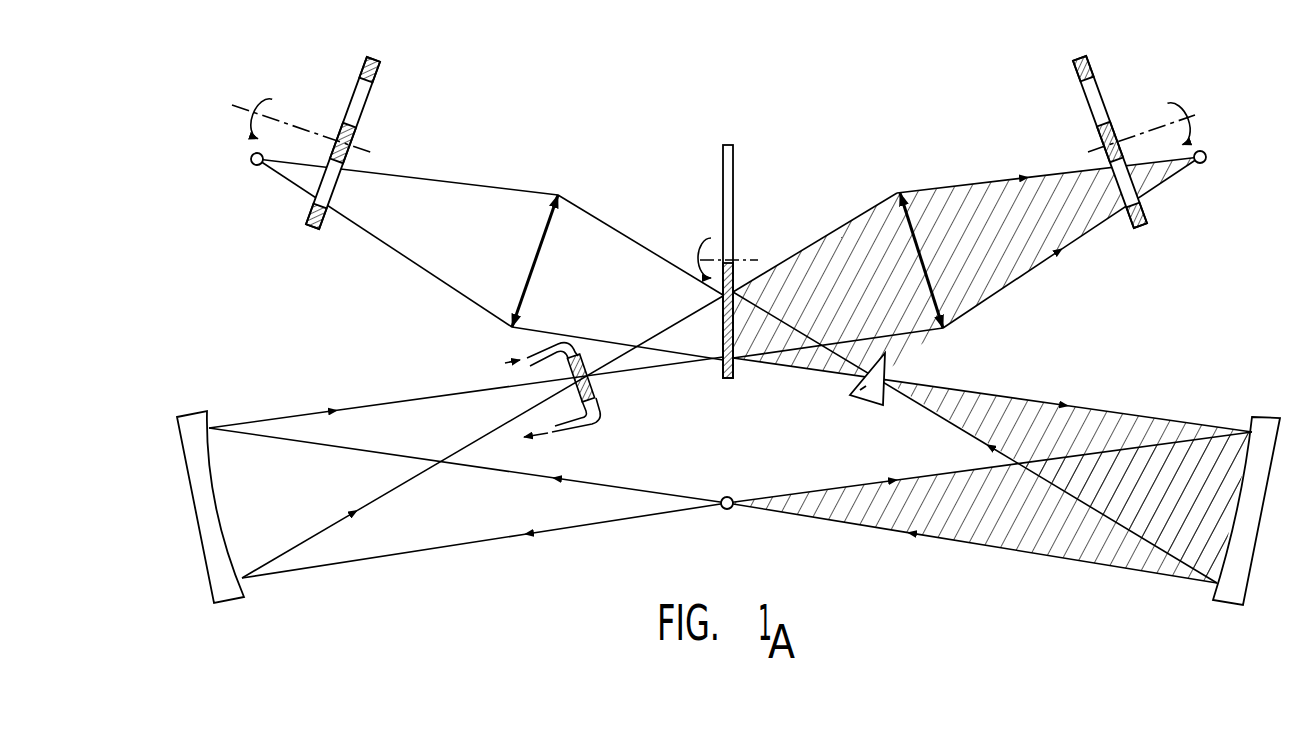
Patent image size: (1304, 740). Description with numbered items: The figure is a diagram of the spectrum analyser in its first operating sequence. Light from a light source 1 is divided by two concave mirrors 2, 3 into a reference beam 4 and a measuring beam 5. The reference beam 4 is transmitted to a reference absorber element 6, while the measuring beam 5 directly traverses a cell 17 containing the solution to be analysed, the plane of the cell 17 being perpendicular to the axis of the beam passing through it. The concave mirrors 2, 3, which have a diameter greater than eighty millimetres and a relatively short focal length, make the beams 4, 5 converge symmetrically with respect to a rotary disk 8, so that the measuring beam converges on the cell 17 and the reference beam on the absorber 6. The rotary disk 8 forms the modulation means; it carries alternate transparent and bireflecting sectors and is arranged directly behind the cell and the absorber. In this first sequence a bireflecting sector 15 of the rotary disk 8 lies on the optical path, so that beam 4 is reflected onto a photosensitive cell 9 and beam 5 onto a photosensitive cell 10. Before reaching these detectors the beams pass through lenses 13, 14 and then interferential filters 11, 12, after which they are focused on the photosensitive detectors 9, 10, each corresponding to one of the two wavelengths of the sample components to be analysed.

The light source 1 is at (727, 511).
The concave mirror 2 is at (198, 420).
The concave mirror 3 is at (1263, 422).
The reference beam 4 is at (975, 405).
The measuring beam 5 is at (386, 405).
The reference absorber element 6 is at (862, 393).
The rotary disk 8 is at (740, 187).
The photosensitive cell 9 is at (1202, 168).
The photosensitive cell 10 is at (257, 168).
The interferential filter 11 is at (1112, 130).
The interferential filter 12 is at (343, 127).
The lens 13 is at (923, 225).
The lens 14 is at (556, 196).
The bireflecting sector 15 is at (727, 380).
The cell 17 is at (601, 393).